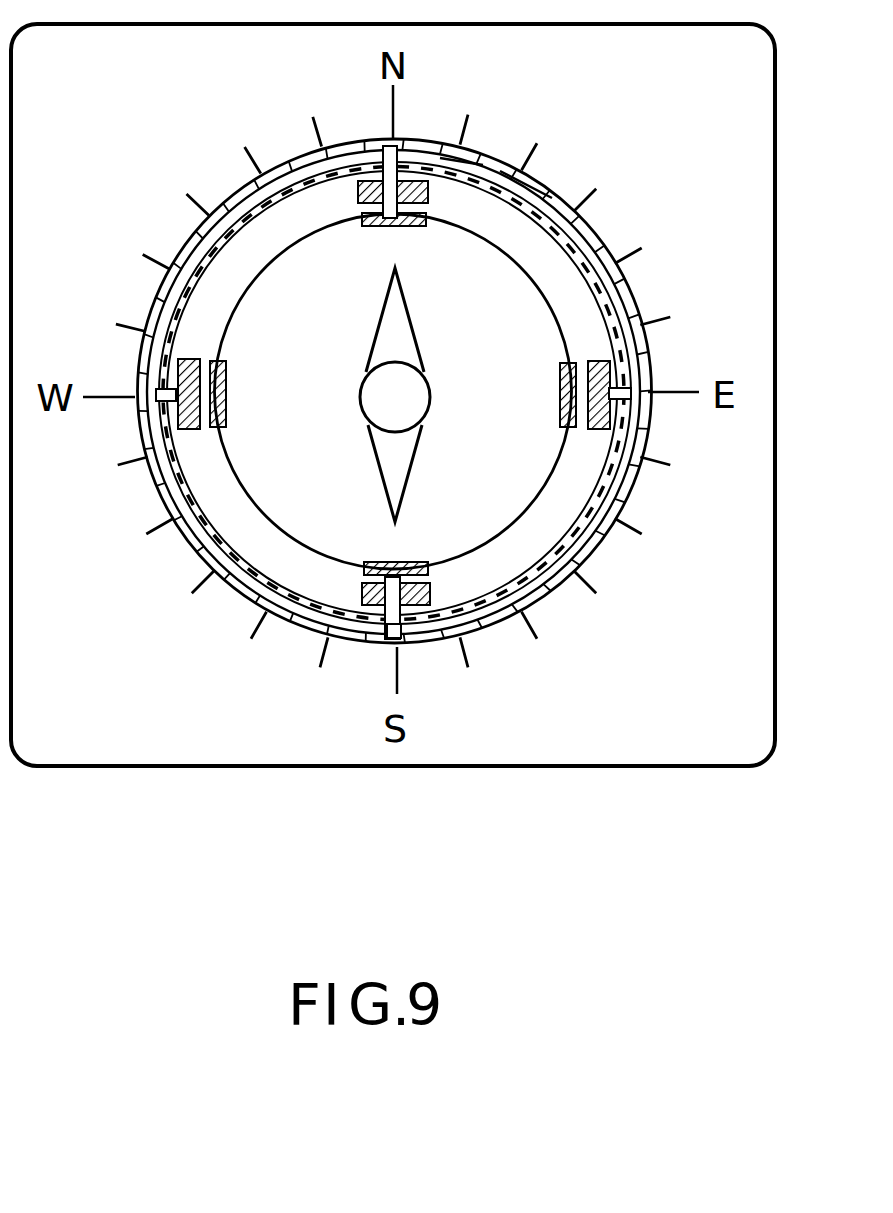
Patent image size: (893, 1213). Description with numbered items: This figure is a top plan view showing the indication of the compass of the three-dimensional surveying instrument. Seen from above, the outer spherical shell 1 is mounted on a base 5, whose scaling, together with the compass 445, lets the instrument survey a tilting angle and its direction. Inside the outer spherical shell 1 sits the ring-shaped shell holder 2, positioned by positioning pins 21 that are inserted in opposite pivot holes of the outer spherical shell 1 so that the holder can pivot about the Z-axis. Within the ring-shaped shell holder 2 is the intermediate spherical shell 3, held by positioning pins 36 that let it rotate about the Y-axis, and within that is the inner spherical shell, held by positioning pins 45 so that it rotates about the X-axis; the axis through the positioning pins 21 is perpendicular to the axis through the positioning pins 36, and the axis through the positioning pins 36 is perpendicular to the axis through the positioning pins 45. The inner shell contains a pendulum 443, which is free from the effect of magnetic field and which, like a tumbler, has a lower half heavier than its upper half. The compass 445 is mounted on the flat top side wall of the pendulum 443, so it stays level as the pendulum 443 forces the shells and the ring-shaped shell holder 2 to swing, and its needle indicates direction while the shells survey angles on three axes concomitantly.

The base 5 is at (746, 175).
The outer spherical shell 1 is at (592, 257).
The ring-shaped shell holder 2 is at (626, 331).
The positioning pins 36 is at (634, 399).
The intermediate spherical shell 3 is at (622, 458).
The pendulum 443 is at (256, 490).
The compass 445 is at (393, 487).
The positioning pins 45 is at (430, 610).
The positioning pins 21 is at (390, 637).